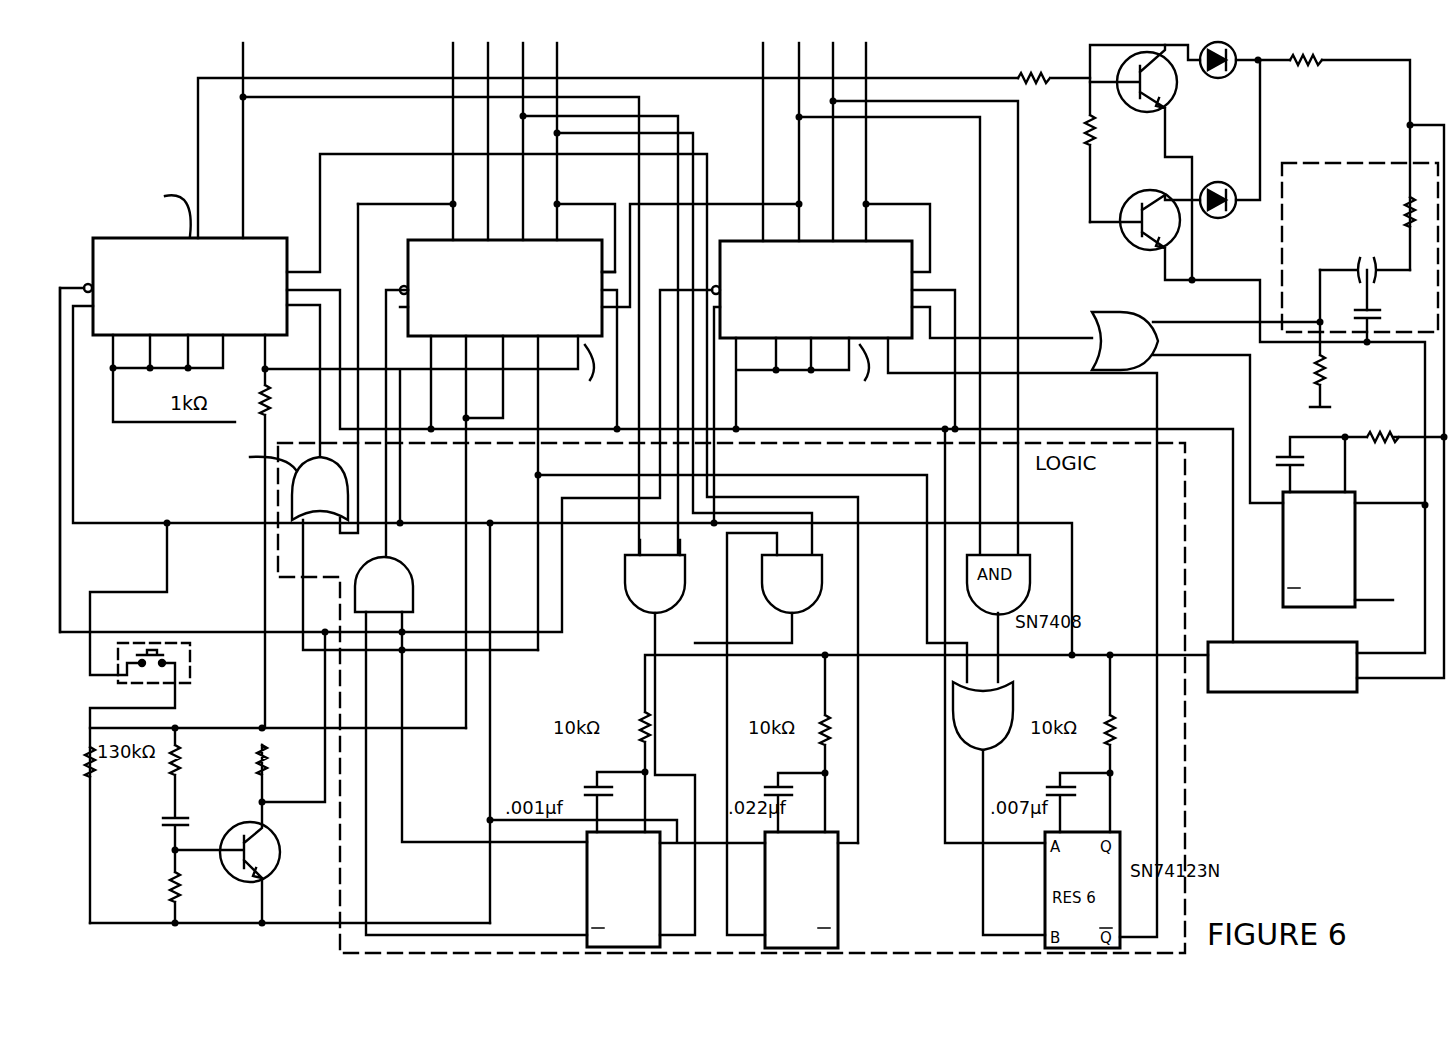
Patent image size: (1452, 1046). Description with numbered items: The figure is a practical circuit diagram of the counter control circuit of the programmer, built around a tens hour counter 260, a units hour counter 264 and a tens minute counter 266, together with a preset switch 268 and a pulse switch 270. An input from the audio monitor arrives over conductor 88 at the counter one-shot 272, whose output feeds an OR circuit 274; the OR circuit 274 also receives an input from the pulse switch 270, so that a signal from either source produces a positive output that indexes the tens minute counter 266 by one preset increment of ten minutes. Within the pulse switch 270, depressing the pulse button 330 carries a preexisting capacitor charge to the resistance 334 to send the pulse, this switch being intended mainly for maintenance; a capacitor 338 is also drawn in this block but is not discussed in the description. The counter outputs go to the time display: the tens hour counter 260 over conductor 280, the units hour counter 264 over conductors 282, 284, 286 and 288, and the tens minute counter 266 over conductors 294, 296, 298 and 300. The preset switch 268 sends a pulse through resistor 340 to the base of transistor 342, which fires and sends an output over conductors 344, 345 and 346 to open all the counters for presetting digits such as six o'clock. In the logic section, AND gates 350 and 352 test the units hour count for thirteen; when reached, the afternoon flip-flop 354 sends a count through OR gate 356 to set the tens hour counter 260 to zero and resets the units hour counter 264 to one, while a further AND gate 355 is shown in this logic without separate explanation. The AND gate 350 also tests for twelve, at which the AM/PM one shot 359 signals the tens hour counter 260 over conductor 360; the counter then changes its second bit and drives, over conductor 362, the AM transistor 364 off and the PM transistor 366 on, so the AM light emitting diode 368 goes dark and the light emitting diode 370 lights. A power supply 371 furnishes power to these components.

The tens hour counter 260 is at (160, 236).
The units hour counter 264 is at (415, 240).
The tens minute counter 266 is at (757, 241).
The preset switch 268 is at (143, 642).
The pulse switch 270 is at (1335, 163).
The counter one-shot 272 is at (1358, 528).
The OR circuit 274 is at (1110, 313).
The conductor 280 is at (245, 48).
The conductor 282 is at (452, 46).
The conductor 284 is at (453, 62).
The conductor 286 is at (524, 48).
The conductor 288 is at (558, 64).
The conductor 294 is at (765, 62).
The conductor 296 is at (763, 46).
The conductor 298 is at (834, 46).
The conductor 300 is at (867, 62).
The pulse button 330 is at (1358, 262).
The resistance 334 is at (1326, 380).
The capacitor 338 is at (1370, 308).
The resistor 340 is at (180, 775).
The transistor 342 is at (174, 850).
The conductor 344 is at (325, 675).
The conductor 345 is at (62, 552).
The conductor 346 is at (630, 560).
The AND gate 350 is at (785, 612).
The AND gate 352 is at (626, 597).
The afternoon flip-flop 354 is at (586, 912).
The AND gate 355 is at (392, 558).
The OR gate 356 is at (293, 493).
The AM/PM one shot 359 is at (840, 917).
The conductor 360 is at (860, 690).
The conductor 362 is at (1020, 77).
The AM transistor 364 is at (1168, 235).
The PM transistor 366 is at (1170, 98).
The AM light emitting diode 368 is at (1232, 212).
The light emitting diode 370 is at (1200, 77).
The power supply 371 is at (1345, 694).
The conductor 88 is at (1362, 599).